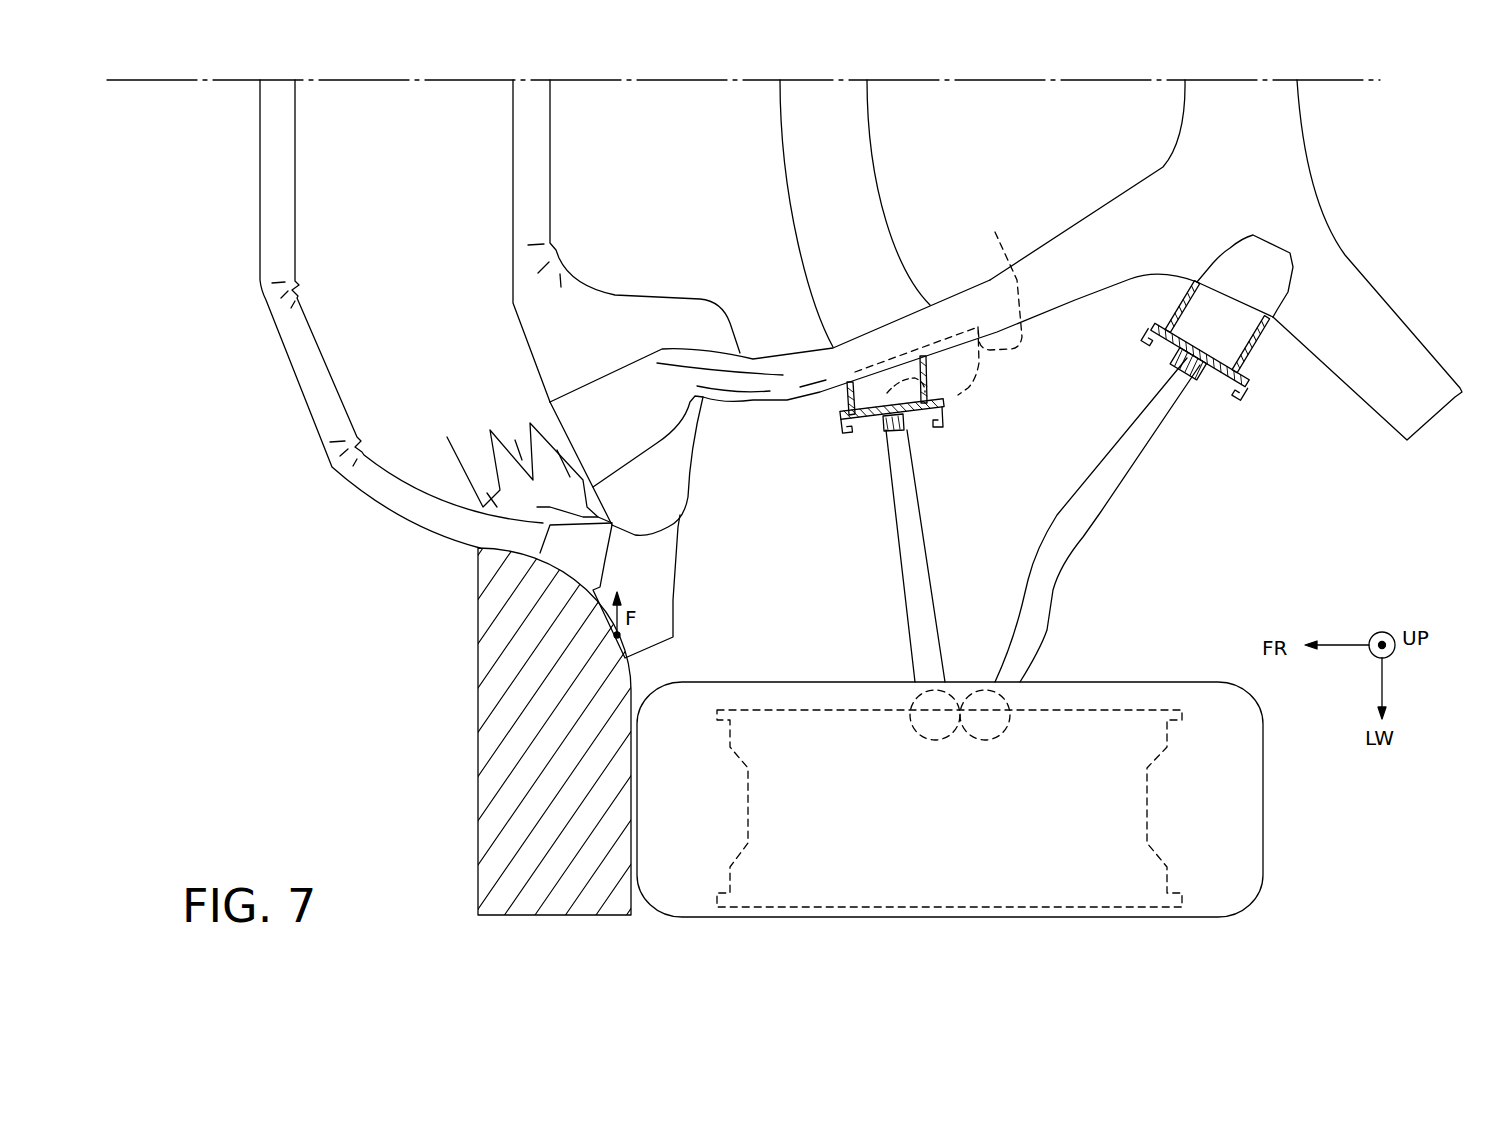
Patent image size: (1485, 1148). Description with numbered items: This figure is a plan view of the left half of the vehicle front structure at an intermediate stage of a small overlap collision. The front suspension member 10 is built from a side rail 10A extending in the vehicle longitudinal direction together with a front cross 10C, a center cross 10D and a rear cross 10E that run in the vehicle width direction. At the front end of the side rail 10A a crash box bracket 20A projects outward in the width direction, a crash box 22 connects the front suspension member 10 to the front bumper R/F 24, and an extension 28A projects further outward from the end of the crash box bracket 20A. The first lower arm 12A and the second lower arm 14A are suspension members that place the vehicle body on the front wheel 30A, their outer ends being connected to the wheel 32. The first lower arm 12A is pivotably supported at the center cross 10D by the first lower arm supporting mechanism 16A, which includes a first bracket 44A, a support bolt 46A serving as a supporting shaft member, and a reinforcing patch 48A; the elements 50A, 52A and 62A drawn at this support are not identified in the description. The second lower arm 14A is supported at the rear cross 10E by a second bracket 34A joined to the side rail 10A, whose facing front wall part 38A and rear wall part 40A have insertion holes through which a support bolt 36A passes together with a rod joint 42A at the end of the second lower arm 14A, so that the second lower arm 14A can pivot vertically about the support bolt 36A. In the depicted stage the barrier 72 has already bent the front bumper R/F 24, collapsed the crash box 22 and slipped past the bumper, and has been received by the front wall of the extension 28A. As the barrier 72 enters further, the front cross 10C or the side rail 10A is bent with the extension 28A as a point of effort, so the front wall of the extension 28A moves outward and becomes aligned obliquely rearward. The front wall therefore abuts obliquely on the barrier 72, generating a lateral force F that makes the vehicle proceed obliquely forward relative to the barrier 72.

The front suspension member 10 is at (458, 232).
The side rail 10A is at (788, 373).
The front cross 10C is at (533, 165).
The center cross 10D is at (807, 127).
The rear cross 10E is at (1220, 130).
The first lower arm 12A is at (918, 625).
The second lower arm 14A is at (1155, 420).
The first lower arm supporting mechanism 16A is at (990, 380).
The crash box bracket 20A is at (668, 483).
The crash box 22 is at (497, 437).
The front bumper R/F 24 is at (320, 383).
The extension 28A is at (648, 572).
The front wheel 30A is at (1140, 680).
The wheel 32 is at (1147, 810).
The second bracket 34A is at (1267, 292).
The support bolt 36A is at (1235, 378).
The front wall part 38A is at (1185, 310).
The rear wall part 40A is at (1260, 340).
The rod joint 42A is at (1182, 343).
The first bracket 44A is at (899, 414).
The support bolt 46A is at (940, 413).
The reinforcing patch 48A is at (938, 296).
The base plate 50A is at (833, 393).
The housing 52A is at (947, 372).
The nut 62A is at (880, 427).
The barrier 72 is at (520, 757).